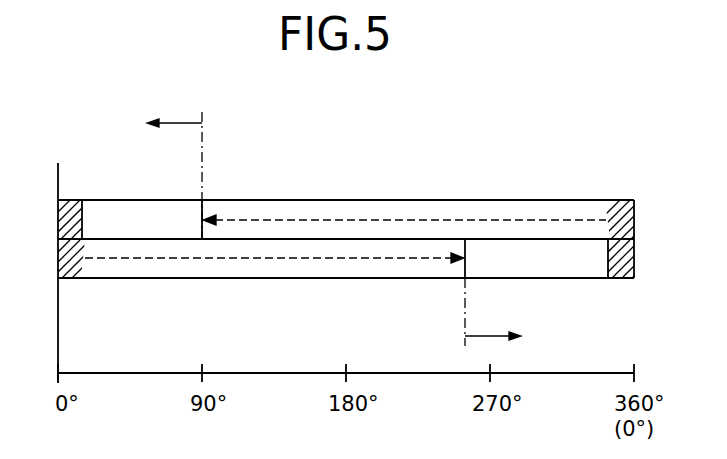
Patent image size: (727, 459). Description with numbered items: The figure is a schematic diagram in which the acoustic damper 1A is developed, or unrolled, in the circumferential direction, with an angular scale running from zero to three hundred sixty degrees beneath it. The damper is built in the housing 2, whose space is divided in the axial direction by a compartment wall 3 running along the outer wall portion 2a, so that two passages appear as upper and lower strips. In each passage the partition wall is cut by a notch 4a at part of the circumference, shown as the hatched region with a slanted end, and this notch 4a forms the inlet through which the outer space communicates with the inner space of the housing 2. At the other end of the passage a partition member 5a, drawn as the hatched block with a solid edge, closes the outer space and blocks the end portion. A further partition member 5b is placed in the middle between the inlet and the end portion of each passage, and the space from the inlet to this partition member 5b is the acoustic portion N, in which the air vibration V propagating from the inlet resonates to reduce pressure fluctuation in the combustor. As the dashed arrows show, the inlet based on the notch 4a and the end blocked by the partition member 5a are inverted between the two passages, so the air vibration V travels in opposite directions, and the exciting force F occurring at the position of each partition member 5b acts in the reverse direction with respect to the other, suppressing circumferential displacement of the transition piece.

The acoustic damper 1A is at (374, 177).
The housing 2 is at (268, 200).
The outer wall portion 2a is at (166, 200).
The compartment wall 3 is at (128, 238).
The notch 4a is at (88, 279).
The partition member 5a is at (88, 213).
The partition member 5b is at (205, 214).
The exciting force F is at (330, 230).
The air vibration V is at (328, 217).
The acoustic portion N is at (536, 206).